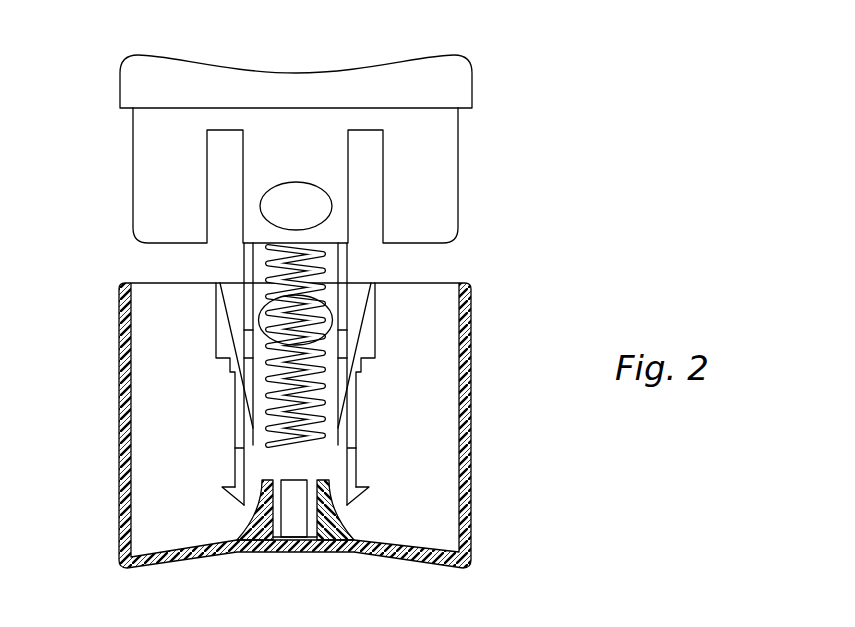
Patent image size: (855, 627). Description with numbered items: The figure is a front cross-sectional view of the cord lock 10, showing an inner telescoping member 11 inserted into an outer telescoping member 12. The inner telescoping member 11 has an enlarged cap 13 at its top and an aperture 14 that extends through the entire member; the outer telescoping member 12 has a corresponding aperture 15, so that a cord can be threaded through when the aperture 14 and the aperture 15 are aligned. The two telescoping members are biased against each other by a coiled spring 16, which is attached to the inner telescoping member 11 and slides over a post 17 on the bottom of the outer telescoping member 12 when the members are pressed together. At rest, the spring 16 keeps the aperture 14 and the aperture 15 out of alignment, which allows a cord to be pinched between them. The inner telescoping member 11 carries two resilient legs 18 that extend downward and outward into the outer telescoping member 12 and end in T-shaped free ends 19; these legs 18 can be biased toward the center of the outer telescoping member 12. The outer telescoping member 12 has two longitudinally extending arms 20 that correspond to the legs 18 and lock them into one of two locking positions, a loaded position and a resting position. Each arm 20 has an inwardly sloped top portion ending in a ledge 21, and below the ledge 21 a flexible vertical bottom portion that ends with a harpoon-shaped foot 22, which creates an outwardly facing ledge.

The cord lock 10 is at (520, 448).
The inner telescoping member 11 is at (462, 195).
The outer telescoping member 12 is at (472, 476).
The enlarged cap 13 is at (295, 78).
The aperture 14 is at (322, 207).
The aperture 15 is at (335, 322).
The coiled spring 16 is at (318, 400).
The central boss 17 is at (258, 532).
The legs 18 is at (245, 263).
The T-shaped free ends 19 is at (248, 341).
The arms 20 is at (242, 417).
The ledge 21 is at (235, 460).
The harpoon-shaped foot 22 is at (227, 492).